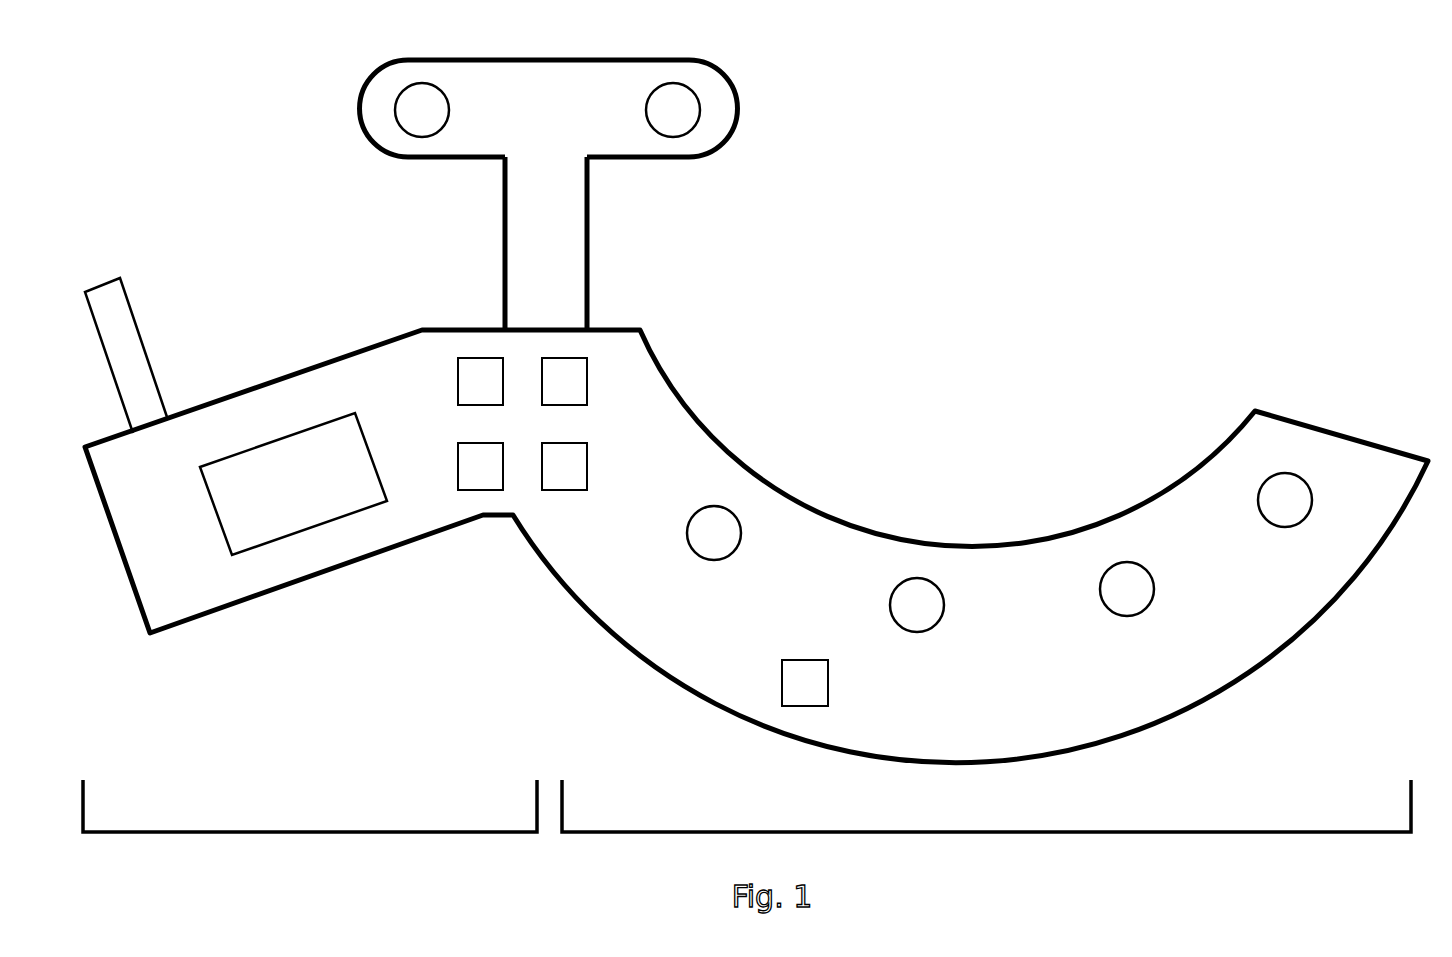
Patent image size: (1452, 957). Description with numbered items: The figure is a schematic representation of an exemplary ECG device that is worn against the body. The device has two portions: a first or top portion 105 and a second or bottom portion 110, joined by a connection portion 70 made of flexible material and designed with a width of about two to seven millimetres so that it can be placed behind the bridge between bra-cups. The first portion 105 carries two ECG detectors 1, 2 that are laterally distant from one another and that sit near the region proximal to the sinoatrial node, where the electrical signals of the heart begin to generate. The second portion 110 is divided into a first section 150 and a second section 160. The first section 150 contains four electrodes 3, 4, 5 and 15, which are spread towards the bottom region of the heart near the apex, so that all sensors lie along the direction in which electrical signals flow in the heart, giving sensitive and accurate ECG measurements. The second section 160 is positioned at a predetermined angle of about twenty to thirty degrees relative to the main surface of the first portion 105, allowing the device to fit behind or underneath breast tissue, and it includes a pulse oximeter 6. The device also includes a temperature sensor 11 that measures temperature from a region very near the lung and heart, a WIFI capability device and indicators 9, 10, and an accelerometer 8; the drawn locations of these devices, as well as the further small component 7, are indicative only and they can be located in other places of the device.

The ECG detector 1 is at (413, 122).
The ECG detector 2 is at (683, 102).
The electrode 3 is at (717, 521).
The electrode 4 is at (918, 593).
The electrode 5 is at (1289, 492).
The pulse oximeter 6 is at (263, 523).
The button 7 is at (468, 477).
The accelerometer 8 is at (561, 480).
The WIFI capability device 9 is at (475, 375).
The indicator 10 is at (570, 372).
The temperature sensor 11 is at (796, 692).
The electrode 15 is at (1126, 579).
The connection portion 70 is at (588, 250).
The first portion 105 is at (737, 103).
The second portion 110 is at (1334, 613).
The first section 150 is at (986, 827).
The second section 160 is at (310, 827).